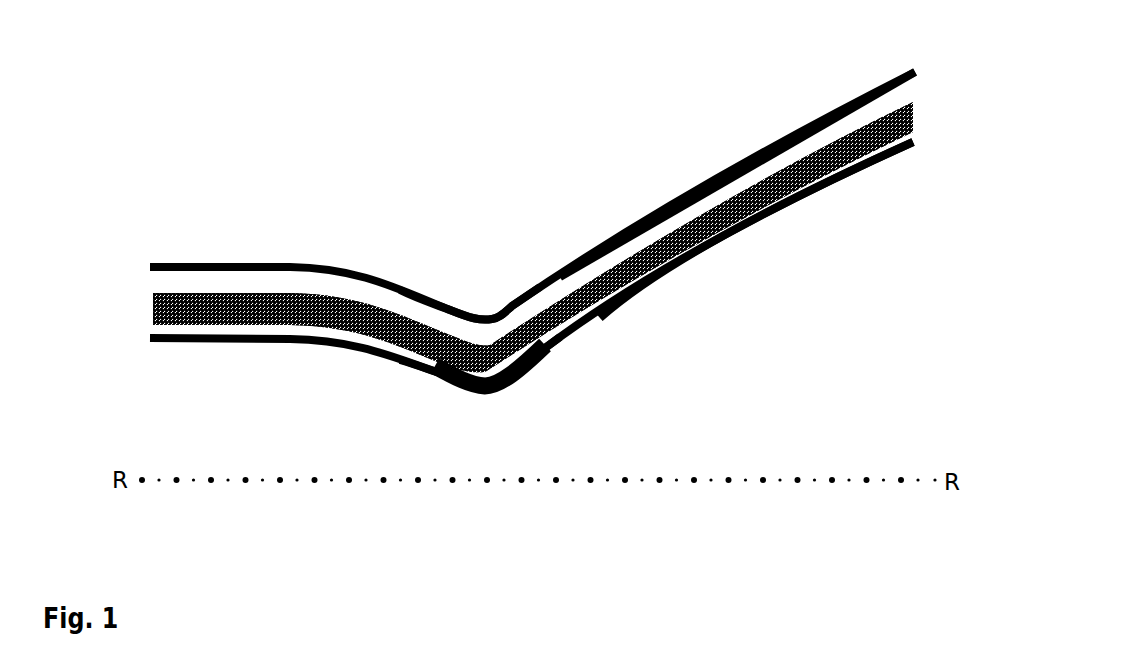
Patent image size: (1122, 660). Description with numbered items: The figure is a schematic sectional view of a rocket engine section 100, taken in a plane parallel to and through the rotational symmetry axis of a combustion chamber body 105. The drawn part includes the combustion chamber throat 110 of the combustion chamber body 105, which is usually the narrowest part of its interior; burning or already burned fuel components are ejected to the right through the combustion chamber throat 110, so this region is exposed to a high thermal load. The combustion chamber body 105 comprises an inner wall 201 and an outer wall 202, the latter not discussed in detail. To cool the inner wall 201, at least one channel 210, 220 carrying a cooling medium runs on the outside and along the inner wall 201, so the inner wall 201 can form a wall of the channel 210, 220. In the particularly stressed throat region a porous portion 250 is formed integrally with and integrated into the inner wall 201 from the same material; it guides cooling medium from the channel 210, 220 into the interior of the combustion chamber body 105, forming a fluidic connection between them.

The rocket engine section 100 is at (326, 144).
The combustion chamber body 105 is at (858, 198).
The combustion chamber throat 110 is at (550, 392).
The inner wall 201 is at (225, 341).
The outer wall 202 is at (190, 262).
The channel 210 is at (710, 217).
The channel 220 is at (710, 217).
The porous portion 250 is at (496, 392).